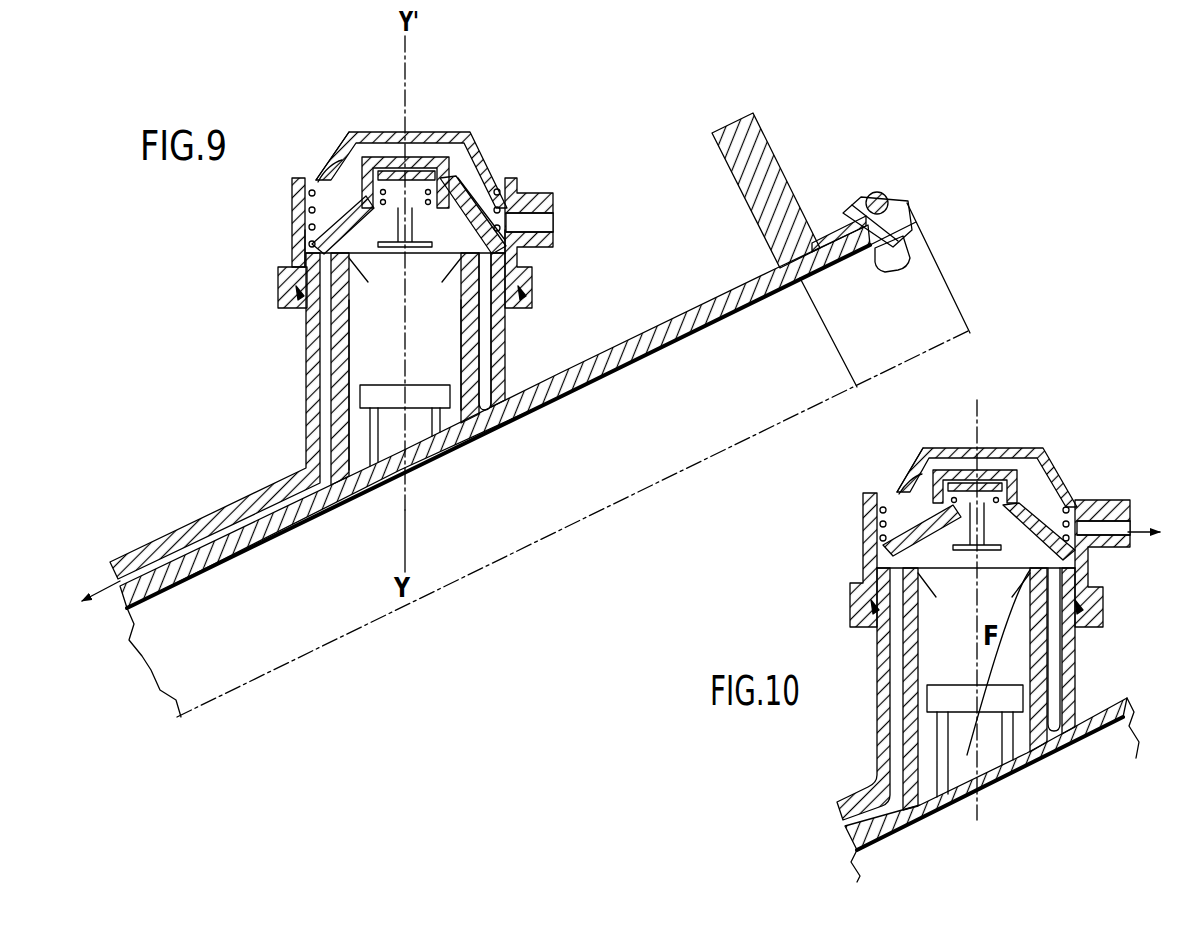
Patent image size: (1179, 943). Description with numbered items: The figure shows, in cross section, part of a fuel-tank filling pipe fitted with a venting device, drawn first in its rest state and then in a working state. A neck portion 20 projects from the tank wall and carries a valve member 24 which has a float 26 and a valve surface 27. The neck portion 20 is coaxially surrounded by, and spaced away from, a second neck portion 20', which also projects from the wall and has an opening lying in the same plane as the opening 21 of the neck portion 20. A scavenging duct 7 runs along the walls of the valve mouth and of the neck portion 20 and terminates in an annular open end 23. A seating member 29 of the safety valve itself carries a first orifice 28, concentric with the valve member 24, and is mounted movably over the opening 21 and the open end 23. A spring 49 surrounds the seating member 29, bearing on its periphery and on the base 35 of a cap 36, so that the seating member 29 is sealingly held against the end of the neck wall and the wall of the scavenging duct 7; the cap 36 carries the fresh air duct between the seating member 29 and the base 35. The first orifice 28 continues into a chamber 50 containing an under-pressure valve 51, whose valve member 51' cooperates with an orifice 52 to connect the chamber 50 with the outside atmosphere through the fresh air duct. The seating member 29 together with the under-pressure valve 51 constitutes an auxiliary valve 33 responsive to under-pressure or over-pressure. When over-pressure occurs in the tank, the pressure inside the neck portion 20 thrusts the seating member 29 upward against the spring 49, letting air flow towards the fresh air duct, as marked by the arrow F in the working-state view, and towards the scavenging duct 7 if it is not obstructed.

In FIG. 9, the scavenging duct 7 is at (214, 512).
In FIG. 10, the scavenging duct 7 is at (851, 800).
In FIG. 9, the neck portion 20 is at (439, 292).
In FIG. 9, the second neck portion 20' is at (539, 331).
In FIG. 9, the opening 21 is at (370, 262).
In FIG. 9, the open end 23 is at (310, 310).
In FIG. 9, the valve member 24 is at (422, 329).
In FIG. 9, the float 26 is at (387, 397).
In FIG. 9, the valve surface 27 is at (410, 255).
In FIG. 9, the first orifice 28 is at (484, 200).
In FIG. 10, the first orifice 28 is at (1045, 512).
In FIG. 9, the seating member 29 is at (510, 168).
In FIG. 10, the seating member 29 is at (1081, 505).
In FIG. 9, the auxiliary valve 33 is at (500, 172).
In FIG. 9, the base 35 is at (361, 135).
In FIG. 9, the cap 36 is at (420, 124).
In FIG. 10, the cap 36 is at (1026, 451).
In FIG. 9, the spring 49 is at (287, 178).
In FIG. 10, the spring 49 is at (898, 489).
In FIG. 9, the chamber 50 is at (301, 247).
In FIG. 10, the chamber 50 is at (880, 534).
In FIG. 9, the under-pressure valve 51 is at (268, 218).
In FIG. 9, the valve member 51' is at (463, 139).
In FIG. 9, the orifice 52 is at (386, 130).
In FIG. 10, the orifice 52 is at (983, 473).